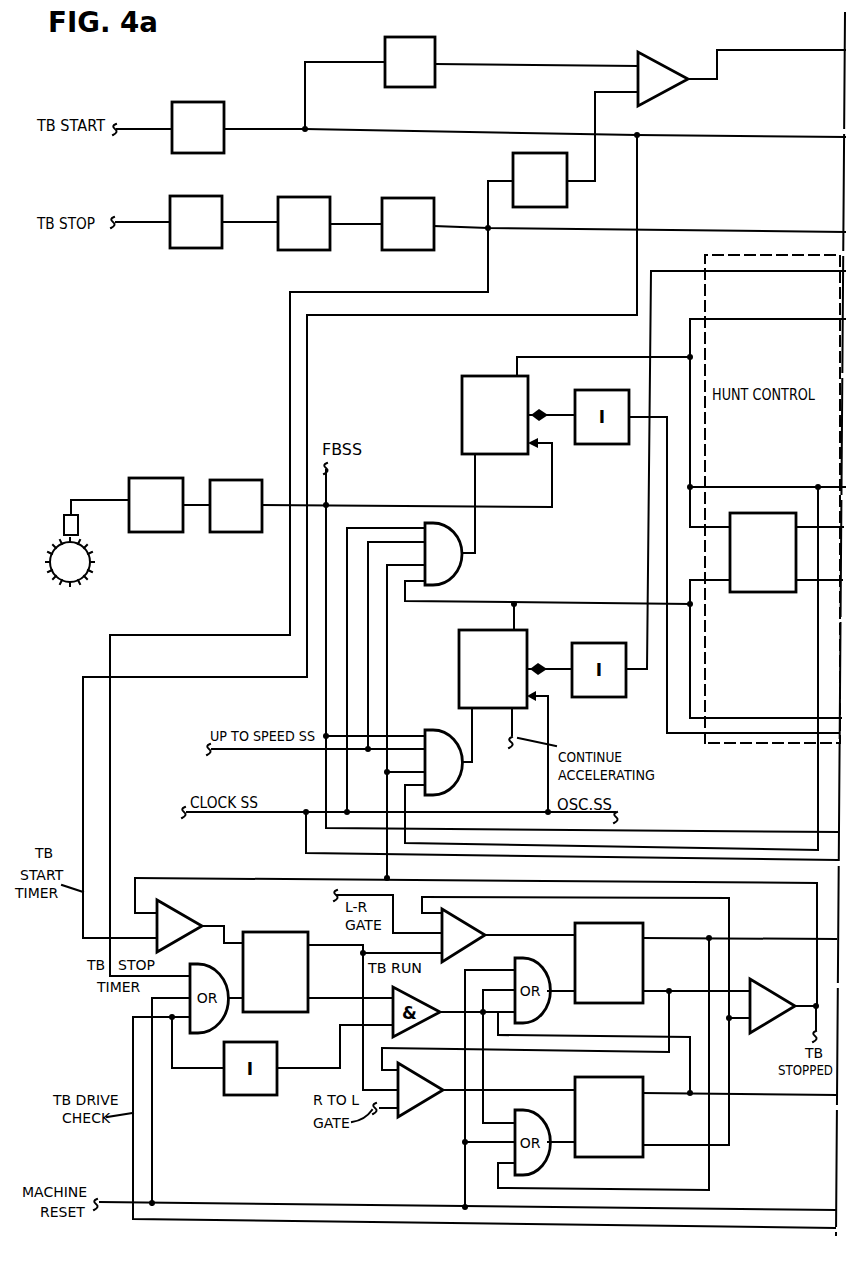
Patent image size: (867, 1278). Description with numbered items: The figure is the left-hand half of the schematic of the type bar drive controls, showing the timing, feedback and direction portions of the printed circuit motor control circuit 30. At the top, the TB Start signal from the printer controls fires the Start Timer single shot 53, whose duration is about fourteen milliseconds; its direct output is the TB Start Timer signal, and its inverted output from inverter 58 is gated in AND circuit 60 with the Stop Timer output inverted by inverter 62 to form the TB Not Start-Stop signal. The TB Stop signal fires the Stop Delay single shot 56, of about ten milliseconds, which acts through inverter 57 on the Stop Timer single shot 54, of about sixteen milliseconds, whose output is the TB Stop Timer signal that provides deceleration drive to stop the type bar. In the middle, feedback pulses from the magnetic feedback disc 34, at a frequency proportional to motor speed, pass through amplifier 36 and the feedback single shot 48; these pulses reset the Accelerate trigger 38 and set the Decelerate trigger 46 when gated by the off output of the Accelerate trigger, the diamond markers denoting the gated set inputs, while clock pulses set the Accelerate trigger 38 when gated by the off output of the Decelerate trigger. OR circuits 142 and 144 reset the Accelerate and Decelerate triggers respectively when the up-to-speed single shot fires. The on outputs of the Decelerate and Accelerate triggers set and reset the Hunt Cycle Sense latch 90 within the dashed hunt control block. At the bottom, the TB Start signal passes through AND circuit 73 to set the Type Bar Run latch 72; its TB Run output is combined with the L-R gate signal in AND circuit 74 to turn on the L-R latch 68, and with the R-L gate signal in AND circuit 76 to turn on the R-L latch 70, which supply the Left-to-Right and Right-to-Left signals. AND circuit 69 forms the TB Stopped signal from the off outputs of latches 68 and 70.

The Start Timer single shot 53 is at (226, 104).
The inverter 58 is at (437, 44).
The AND circuit 60 is at (638, 62).
The Stop Delay single shot 56 is at (224, 203).
The inverter 57 is at (330, 222).
The Stop Timer single shot 54 is at (434, 214).
The inverter 62 is at (567, 196).
The Decelerate trigger 46 is at (462, 386).
The amplifier 36 is at (134, 478).
The magnetic feedback disc 34 is at (88, 553).
The feedback single shot 48 is at (258, 532).
The OR circuit 144 is at (461, 570).
The control circuit 30 is at (597, 567).
The Accelerate trigger 38 is at (527, 650).
The OR circuit 142 is at (452, 733).
The Hunt Cycle Sense latch 90 is at (792, 592).
The AND circuit 73 is at (197, 923).
The Type Bar Run latch 72 is at (296, 932).
The AND circuit 74 is at (477, 924).
The L-R latch 68 is at (643, 926).
The AND circuit 69 is at (782, 997).
The AND circuit 76 is at (430, 1100).
The R-L latch 70 is at (603, 1158).